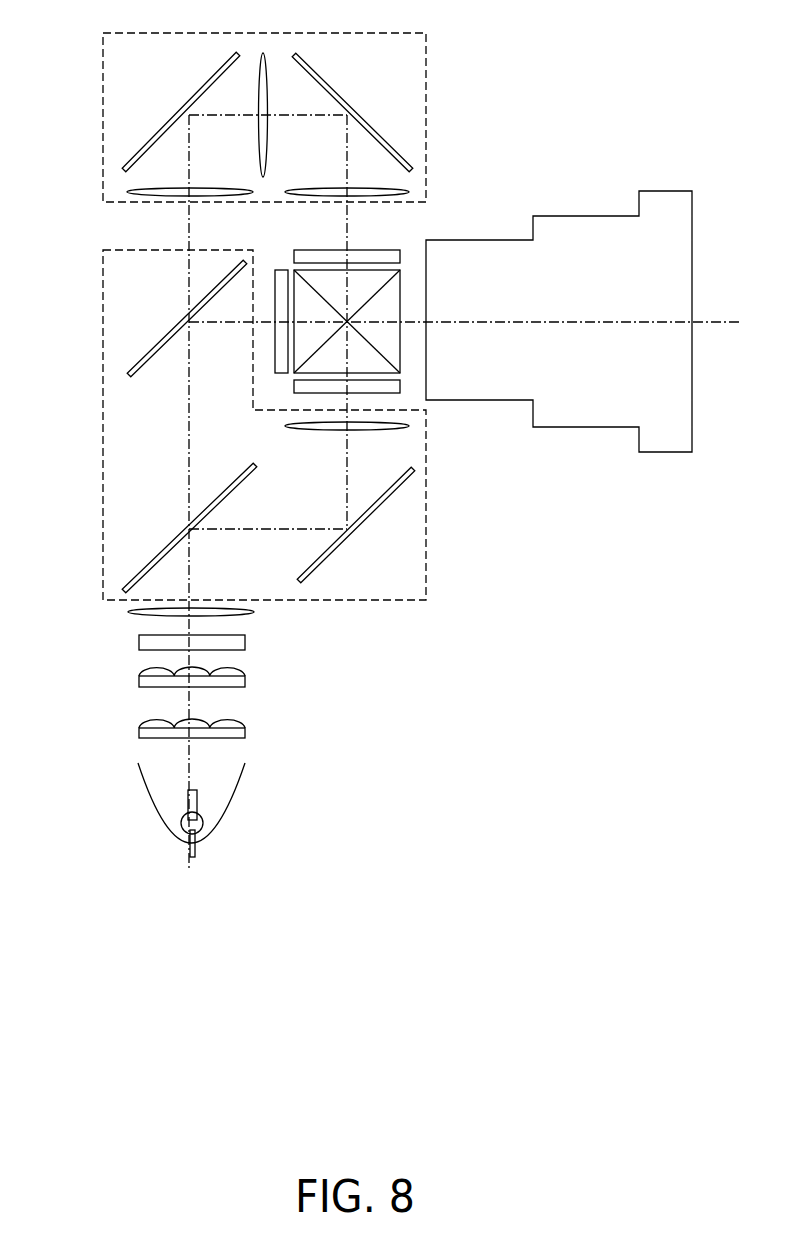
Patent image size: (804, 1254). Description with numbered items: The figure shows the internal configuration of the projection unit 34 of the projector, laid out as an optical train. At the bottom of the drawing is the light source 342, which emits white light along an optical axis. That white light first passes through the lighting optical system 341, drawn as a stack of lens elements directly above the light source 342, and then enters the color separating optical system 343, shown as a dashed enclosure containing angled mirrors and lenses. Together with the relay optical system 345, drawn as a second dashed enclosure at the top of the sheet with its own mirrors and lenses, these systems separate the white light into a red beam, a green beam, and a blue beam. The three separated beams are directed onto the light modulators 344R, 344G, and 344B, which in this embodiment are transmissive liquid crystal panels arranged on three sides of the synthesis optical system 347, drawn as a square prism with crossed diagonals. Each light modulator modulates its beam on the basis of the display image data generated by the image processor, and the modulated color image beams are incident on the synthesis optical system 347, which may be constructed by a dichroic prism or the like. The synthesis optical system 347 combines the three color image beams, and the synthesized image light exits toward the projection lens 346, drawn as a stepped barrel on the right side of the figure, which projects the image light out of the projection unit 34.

The projection unit 34 is at (506, 65).
The lighting optical system 341 is at (290, 607).
The light source 342 is at (237, 802).
The color separating optical system 343 is at (427, 547).
The light modulator 344R is at (300, 393).
The light modulator 344G is at (275, 282).
The light modulator 344B is at (335, 250).
The relay optical system 345 is at (103, 115).
The projection lens 346 is at (662, 191).
The synthesis optical system 347 is at (401, 283).